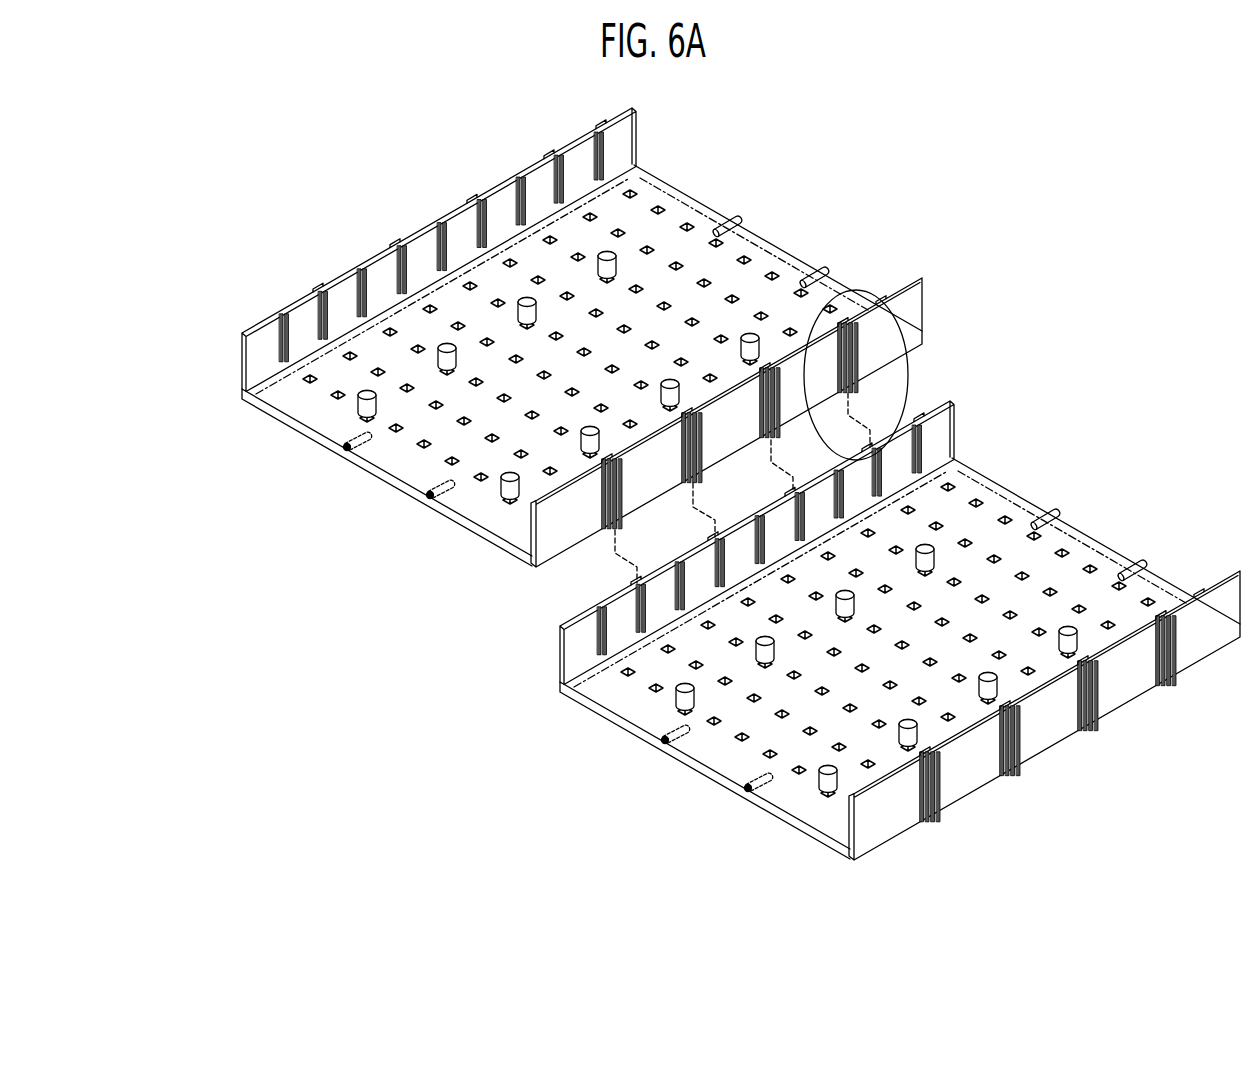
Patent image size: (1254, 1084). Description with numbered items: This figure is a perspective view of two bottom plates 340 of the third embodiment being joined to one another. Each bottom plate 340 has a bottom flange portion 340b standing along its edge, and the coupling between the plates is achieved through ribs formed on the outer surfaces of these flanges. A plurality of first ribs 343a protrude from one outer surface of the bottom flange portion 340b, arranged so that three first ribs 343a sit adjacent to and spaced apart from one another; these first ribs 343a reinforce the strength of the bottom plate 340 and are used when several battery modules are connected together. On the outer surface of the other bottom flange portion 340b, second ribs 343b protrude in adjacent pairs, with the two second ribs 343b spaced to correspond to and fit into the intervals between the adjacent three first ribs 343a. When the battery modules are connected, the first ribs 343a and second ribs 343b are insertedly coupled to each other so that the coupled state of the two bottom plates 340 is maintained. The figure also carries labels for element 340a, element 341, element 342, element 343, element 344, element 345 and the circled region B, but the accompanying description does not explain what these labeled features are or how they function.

The bottom plate 340 is at (680, 484).
The base plate 340a is at (274, 396).
The bottom flange portion 340b is at (250, 359).
The coupling pin 341 is at (818, 270).
The hole 342 is at (508, 260).
The fastening portion 343 is at (758, 421).
The first ribs 343a is at (875, 303).
The second ribs 343b is at (612, 118).
The slot 344 is at (280, 338).
The coupling guide line 345 is at (622, 548).
The detail region B is at (907, 372).